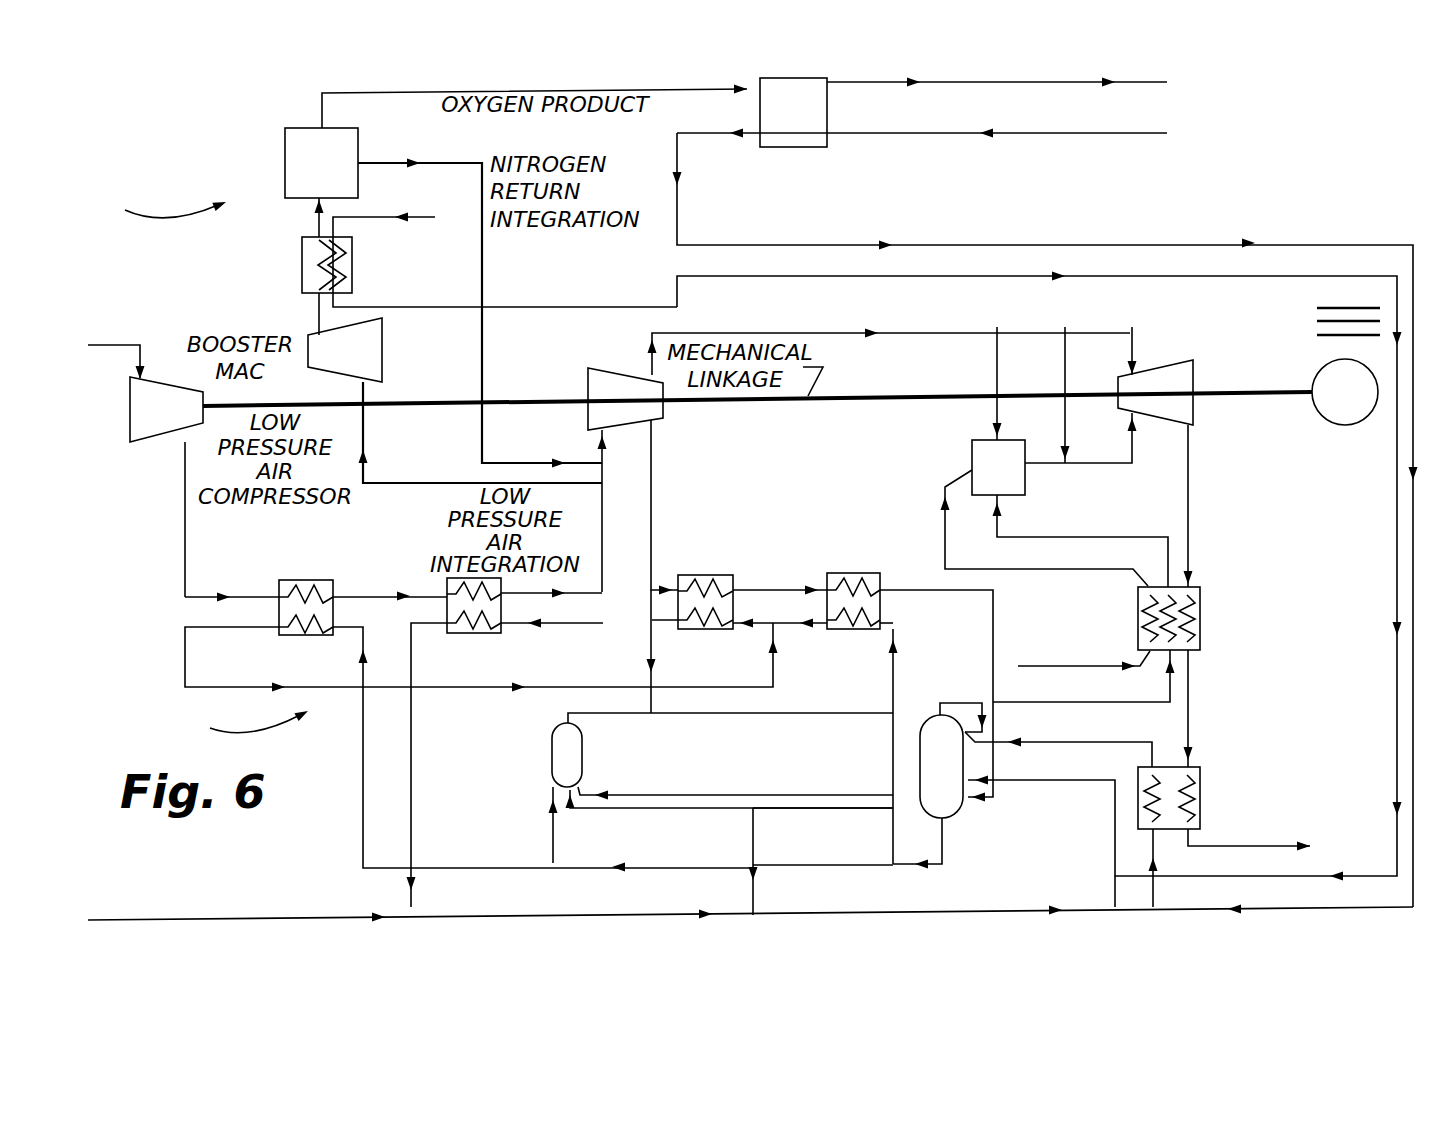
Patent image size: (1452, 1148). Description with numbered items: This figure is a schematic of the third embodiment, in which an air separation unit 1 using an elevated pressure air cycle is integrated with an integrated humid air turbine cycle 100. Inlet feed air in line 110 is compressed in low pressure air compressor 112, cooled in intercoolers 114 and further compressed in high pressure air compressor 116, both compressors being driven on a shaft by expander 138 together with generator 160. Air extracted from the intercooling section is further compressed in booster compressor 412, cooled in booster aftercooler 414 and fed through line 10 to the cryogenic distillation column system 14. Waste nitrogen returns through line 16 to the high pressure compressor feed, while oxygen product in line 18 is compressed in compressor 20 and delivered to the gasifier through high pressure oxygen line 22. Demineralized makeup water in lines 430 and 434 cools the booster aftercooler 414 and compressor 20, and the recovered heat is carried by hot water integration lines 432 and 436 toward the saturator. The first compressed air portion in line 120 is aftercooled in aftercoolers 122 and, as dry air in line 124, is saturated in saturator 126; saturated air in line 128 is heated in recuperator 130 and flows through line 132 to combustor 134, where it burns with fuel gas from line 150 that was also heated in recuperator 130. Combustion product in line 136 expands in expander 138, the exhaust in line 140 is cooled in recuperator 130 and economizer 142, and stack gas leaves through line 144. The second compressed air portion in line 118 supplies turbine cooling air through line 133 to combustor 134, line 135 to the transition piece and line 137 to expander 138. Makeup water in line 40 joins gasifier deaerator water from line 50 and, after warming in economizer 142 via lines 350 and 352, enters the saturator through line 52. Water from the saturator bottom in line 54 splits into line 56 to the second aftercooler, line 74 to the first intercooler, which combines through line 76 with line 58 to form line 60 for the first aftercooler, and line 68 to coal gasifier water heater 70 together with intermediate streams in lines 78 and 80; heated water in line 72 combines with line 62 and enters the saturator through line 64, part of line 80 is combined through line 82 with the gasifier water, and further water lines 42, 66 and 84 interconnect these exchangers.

The air separation unit 1 is at (170, 210).
The feed air line 10 is at (315, 228).
The cryogenic distillation column system 14 is at (285, 172).
The nitrogen product line 16 is at (378, 160).
The oxygen product line 18 is at (322, 113).
The oxygen product compressor 20 is at (795, 155).
The high pressure oxygen to gasifier 22 is at (1143, 84).
The make-up water line 40 is at (565, 621).
The intercooler water line 42 is at (411, 770).
The gasifier deaerator water line 50 is at (378, 908).
The hot water line to economizer 52 is at (1075, 748).
The saturator bottom water line 54 is at (958, 890).
The first substream line 56 is at (893, 826).
The second aftercooler warmed water line 58 is at (817, 621).
The combined warmed water line 60 is at (763, 624).
The first aftercooler heated water line 62 is at (657, 692).
The saturator feed water line 64 is at (825, 713).
The water return line 66 is at (863, 864).
The third substream line 68 is at (553, 848).
The coal gasifier water heater 70 is at (567, 755).
The heated water line 72 is at (622, 713).
The second substream line 74 is at (457, 866).
The intercooler warmed water line 76 is at (468, 688).
The intermediate water stream line 78 is at (830, 792).
The lower intermediate water stream line 80 is at (809, 812).
The water combining line 82 is at (750, 828).
The water line 84 is at (598, 810).
The integrated humid air turbine cycle 100 is at (249, 716).
The feed air line 110 is at (121, 345).
The low pressure air compressor 112 is at (166, 487).
The intercoolers 114 is at (308, 636).
The high pressure air compressor 116 is at (625, 480).
The second compressed air portion line 118 is at (650, 366).
The first compressed air portion line 120 is at (648, 452).
The aftercoolers 122 is at (827, 601).
The dry air line 124 is at (995, 645).
The saturator 126 is at (1004, 790).
The saturated air line 128 is at (1100, 703).
The recuperator 130 is at (1202, 637).
The heated saturated air line 132 is at (1047, 538).
The combustor cooling air line 133 is at (1035, 360).
The combustor 134 is at (1013, 495).
The transition piece cooling air line 135 is at (1099, 358).
The combustion product line 136 is at (1130, 445).
The expander cooling air line 137 is at (1134, 340).
The expander 138 is at (1155, 392).
The exhaust gas line 140 is at (1190, 505).
The economizer 142 is at (1200, 800).
The stack gas line 144 is at (1292, 849).
The fuel gas line 150 is at (1035, 664).
The generator 160 is at (1345, 351).
The economizer water line 350 is at (1113, 903).
The water line to economizer 352 is at (1152, 840).
The booster compressor 412 is at (345, 350).
The booster compressor aftercooler 414 is at (300, 258).
The make up water line to aftercooler 430 is at (360, 217).
The hot water integration line 432 is at (543, 305).
The make up water line to oxygen compressor 434 is at (1140, 134).
The hot water integration line 436 is at (945, 244).